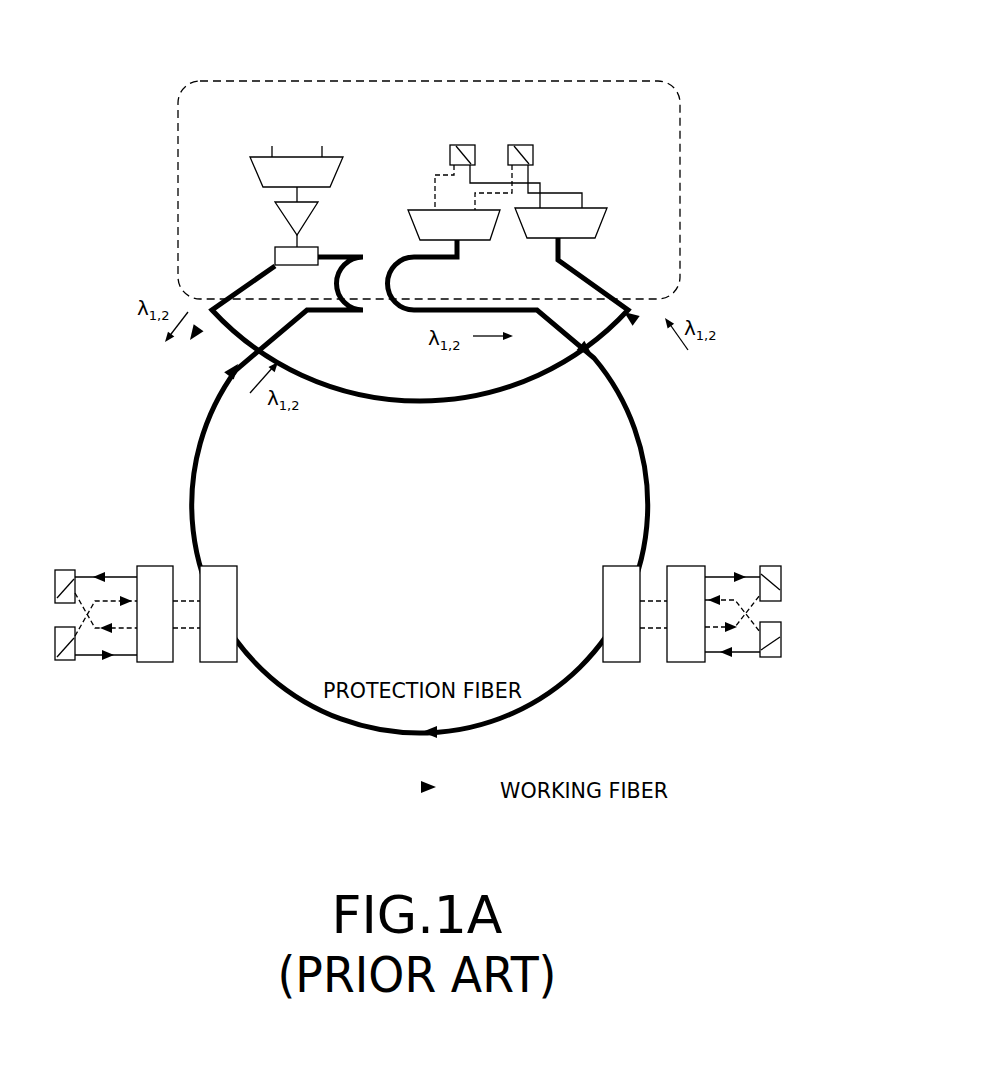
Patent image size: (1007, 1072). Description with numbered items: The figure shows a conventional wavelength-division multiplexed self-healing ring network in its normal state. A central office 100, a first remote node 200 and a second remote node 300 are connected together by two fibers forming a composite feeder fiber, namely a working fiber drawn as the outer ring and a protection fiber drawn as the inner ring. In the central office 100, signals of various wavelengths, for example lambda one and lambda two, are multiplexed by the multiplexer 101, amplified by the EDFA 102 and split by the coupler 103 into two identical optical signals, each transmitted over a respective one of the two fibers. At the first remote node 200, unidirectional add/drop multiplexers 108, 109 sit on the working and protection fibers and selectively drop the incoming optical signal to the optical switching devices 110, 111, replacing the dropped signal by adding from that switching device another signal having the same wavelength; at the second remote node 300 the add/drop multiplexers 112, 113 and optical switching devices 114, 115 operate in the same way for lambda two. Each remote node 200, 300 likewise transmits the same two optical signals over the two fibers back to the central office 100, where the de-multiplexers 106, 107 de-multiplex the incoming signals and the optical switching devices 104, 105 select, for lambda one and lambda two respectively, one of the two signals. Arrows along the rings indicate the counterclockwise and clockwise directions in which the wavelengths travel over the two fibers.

The central office 100 is at (434, 81).
The multiplexer 101 is at (250, 167).
The EDFA amplifier 102 is at (279, 214).
The coupler 103 is at (275, 256).
The optical switching device 104 is at (450, 152).
The optical switching device 105 is at (535, 151).
The de-multiplexer 106 is at (410, 228).
The de-multiplexer 107 is at (603, 229).
The unidirectional add/drop multiplexer 108 is at (156, 566).
The unidirectional add/drop multiplexer 109 is at (218, 566).
The optical switching device 110 is at (65, 570).
The optical switching device 111 is at (64, 662).
The unidirectional add/drop multiplexer 112 is at (683, 566).
The unidirectional add/drop multiplexer 113 is at (621, 566).
The optical switching device 114 is at (770, 566).
The optical switching device 115 is at (770, 660).
The remote node 200 is at (64, 460).
The remote node 300 is at (767, 456).